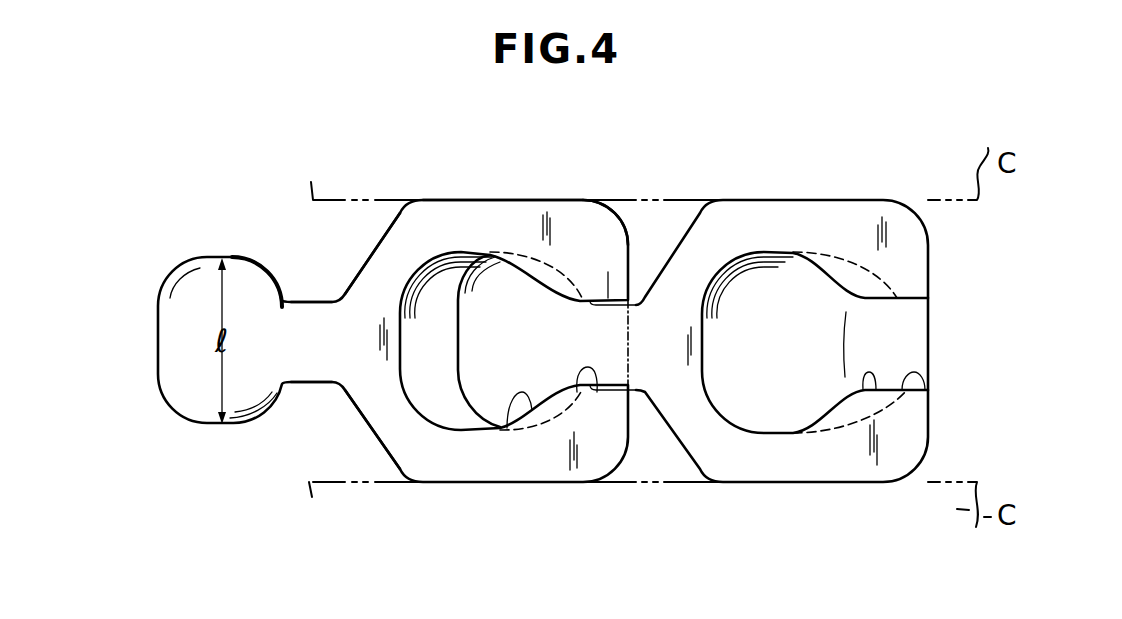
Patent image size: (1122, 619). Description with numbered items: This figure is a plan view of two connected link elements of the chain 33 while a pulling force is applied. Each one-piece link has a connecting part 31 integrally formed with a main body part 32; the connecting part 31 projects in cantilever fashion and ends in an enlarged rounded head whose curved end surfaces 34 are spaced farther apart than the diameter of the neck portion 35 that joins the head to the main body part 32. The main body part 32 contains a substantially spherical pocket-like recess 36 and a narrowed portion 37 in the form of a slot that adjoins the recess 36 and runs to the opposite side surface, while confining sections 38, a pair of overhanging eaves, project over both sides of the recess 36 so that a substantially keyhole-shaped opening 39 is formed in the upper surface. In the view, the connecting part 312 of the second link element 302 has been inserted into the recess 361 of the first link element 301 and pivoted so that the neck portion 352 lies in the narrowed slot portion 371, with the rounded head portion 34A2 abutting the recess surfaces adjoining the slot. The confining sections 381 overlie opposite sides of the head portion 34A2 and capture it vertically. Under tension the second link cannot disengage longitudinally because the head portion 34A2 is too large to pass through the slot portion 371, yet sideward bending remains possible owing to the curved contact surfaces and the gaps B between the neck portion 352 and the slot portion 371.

The first link element 301 is at (474, 191).
The second link element 302 is at (822, 197).
The connecting part 31 is at (310, 280).
The main body part 32 is at (524, 196).
The chain 33 is at (607, 136).
The curved end surfaces 34 is at (222, 257).
The rounded head portion of the second link element 34A2 is at (481, 394).
The neck portion 35 is at (303, 374).
The neck portion of the second link element 352 is at (640, 382).
The pocket-like recess 36 is at (737, 403).
The recess of the first link element 361 is at (455, 398).
The connecting part of the second link element 312 is at (418, 393).
The narrowed portion 37 is at (927, 386).
The narrowed slot portion of the first link element 371 is at (577, 393).
The confining sections 38 is at (847, 278).
The confining sections of the first link element 381 is at (553, 272).
The keyhole-shaped opening 39 is at (506, 425).
The gaps B is at (608, 272).